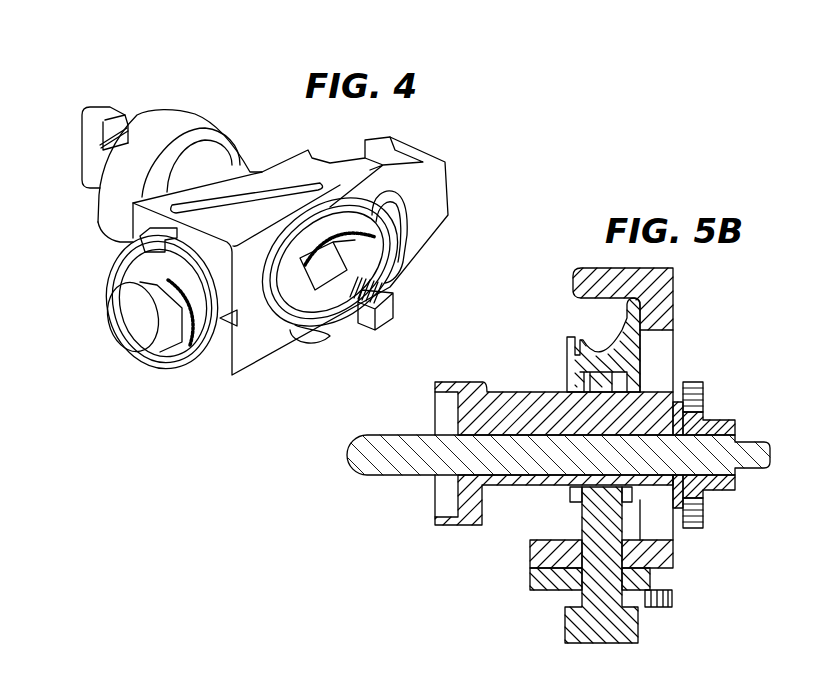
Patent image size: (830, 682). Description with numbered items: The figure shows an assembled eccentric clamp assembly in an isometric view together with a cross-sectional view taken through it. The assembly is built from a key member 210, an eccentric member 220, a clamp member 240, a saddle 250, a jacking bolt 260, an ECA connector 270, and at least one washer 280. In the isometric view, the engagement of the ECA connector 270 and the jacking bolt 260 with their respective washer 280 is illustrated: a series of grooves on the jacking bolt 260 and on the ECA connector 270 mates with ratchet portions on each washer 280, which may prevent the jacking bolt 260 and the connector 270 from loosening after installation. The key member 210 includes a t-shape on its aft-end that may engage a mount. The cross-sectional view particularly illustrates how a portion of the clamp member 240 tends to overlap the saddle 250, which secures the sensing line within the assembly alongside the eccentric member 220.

In FIG. 4, the key member 210 is at (105, 108).
In FIG. 5B, the key member 210 is at (348, 470).
In FIG. 4, the eccentric member 220 is at (195, 112).
In FIG. 5B, the eccentric member 220 is at (436, 383).
In FIG. 4, the clamp member 240 is at (452, 176).
In FIG. 5B, the clamp member 240 is at (675, 268).
In FIG. 5B, the saddle 250 is at (570, 338).
In FIG. 4, the jacking bolt 260 is at (128, 352).
In FIG. 5B, the jacking bolt 260 is at (630, 643).
In FIG. 4, the ECA connector 270 is at (390, 264).
In FIG. 5B, the ECA connector 270 is at (730, 490).
In FIG. 4, the washer 280 is at (200, 367).
In FIG. 5B, the washer 280 is at (684, 528).